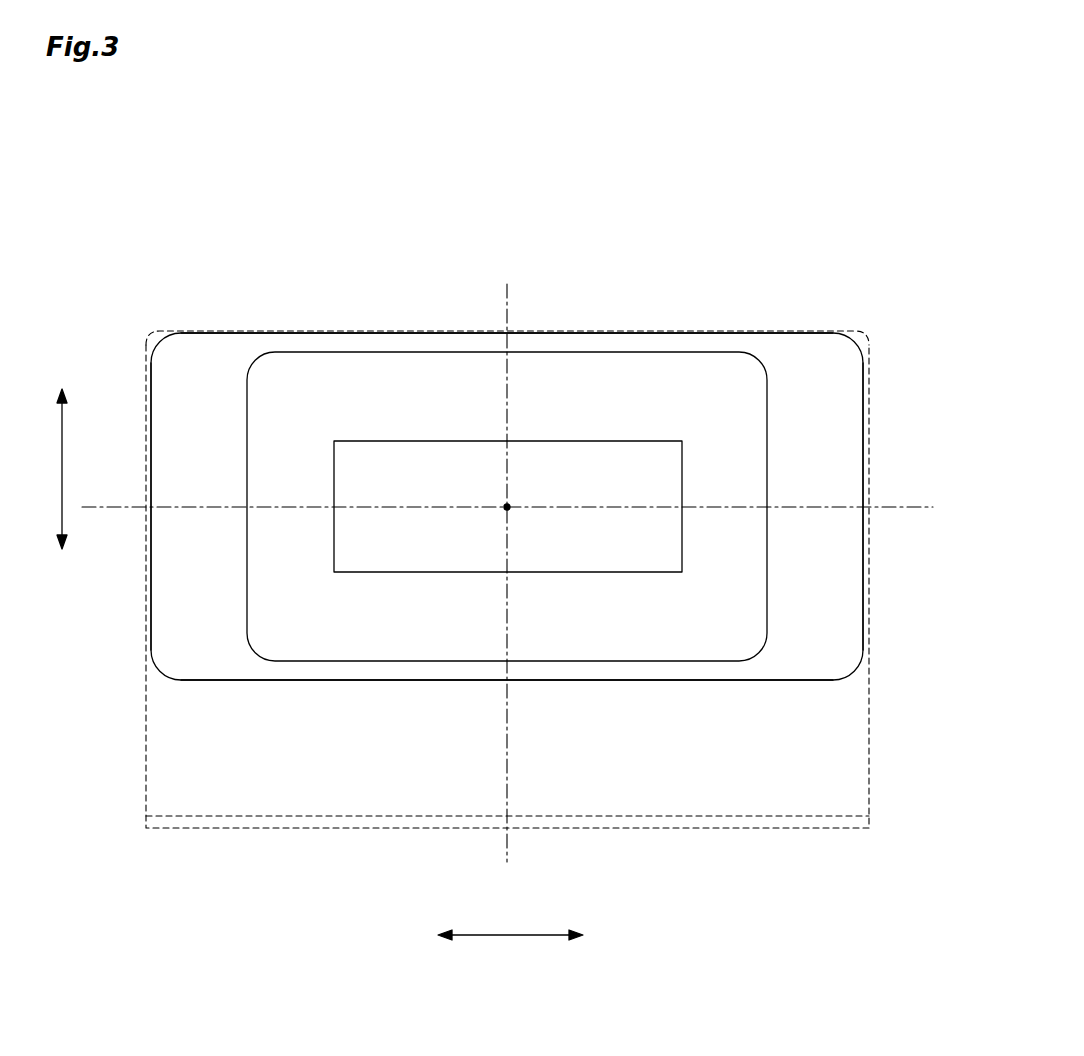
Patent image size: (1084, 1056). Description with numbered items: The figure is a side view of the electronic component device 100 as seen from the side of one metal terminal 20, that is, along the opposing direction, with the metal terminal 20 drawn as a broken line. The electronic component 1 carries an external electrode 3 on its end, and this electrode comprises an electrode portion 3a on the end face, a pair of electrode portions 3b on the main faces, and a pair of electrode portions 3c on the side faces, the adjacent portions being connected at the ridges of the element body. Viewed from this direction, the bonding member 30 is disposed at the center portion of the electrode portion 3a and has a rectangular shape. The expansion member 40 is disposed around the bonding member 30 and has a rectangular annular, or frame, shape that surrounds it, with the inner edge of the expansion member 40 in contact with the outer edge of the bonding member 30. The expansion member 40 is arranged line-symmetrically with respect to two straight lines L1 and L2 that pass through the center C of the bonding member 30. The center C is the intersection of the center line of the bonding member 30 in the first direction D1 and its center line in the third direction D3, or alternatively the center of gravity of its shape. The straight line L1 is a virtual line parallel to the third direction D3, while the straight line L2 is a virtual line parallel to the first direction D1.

The electronic component device 100 is at (773, 200).
The electronic component 1 is at (197, 287).
The external electrode 3 is at (760, 333).
The electrode portion 3a is at (836, 468).
The electrode portion 3b is at (377, 333).
The electrode portion 3c is at (150, 582).
The metal terminal 20 is at (869, 752).
The bonding member 30 is at (542, 440).
The expansion member 40 is at (479, 350).
The center C is at (512, 505).
The straight line L1 is at (888, 507).
The straight line L2 is at (509, 775).
The first direction D1 is at (64, 477).
The third direction D3 is at (509, 937).